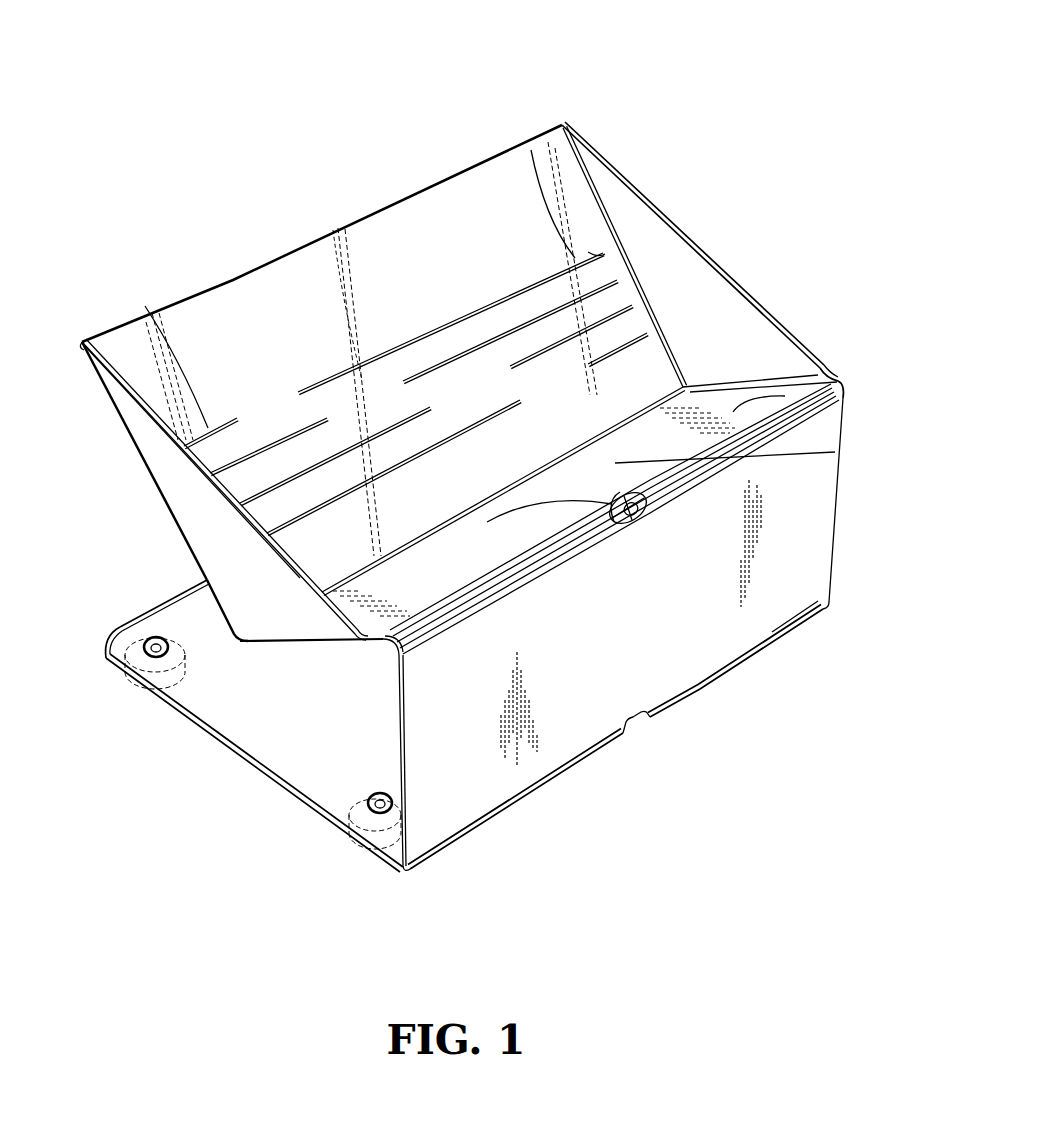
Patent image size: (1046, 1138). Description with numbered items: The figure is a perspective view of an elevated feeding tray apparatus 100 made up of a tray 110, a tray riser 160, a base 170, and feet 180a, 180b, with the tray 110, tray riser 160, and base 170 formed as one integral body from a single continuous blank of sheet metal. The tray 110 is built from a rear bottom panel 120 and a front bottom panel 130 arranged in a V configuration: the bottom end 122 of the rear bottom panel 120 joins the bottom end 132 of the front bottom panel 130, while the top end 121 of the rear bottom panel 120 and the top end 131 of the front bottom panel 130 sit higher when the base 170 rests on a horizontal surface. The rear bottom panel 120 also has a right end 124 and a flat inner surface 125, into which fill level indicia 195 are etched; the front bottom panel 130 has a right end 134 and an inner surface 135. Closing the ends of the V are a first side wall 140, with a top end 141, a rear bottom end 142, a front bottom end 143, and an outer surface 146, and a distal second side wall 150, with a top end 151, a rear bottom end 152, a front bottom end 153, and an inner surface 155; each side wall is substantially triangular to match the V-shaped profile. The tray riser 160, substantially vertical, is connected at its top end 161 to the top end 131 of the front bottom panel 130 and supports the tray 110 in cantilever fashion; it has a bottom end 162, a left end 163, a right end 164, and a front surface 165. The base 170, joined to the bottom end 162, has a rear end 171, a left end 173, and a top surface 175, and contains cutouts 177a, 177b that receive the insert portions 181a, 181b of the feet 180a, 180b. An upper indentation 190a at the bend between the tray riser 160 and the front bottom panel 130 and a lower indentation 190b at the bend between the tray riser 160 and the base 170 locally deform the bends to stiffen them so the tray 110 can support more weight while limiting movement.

The elevated feeding tray apparatus 100 is at (684, 80).
The tray 110 is at (214, 266).
The rear bottom panel 120 is at (495, 157).
The top end 121 is at (305, 238).
The bottom end 122 is at (495, 468).
The right end 124 is at (531, 150).
The inner surface 125 is at (245, 339).
The front bottom panel 130 is at (846, 393).
The top end 131 is at (836, 456).
The bottom end 132 is at (640, 525).
The right end 134 is at (723, 400).
The inner surface 135 is at (414, 573).
The first side wall 140 is at (165, 458).
The top end 141 is at (245, 527).
The rear bottom end 142 is at (200, 543).
The front bottom end 143 is at (293, 627).
The outer surface 146 is at (235, 597).
The second side wall 150 is at (628, 217).
The top end 151 is at (693, 243).
The rear bottom end 152 is at (643, 283).
The front bottom end 153 is at (722, 378).
The inner surface 155 is at (674, 326).
The tray riser 160 is at (445, 783).
The top end 161 is at (600, 548).
The bottom end 162 is at (683, 690).
The left end 163 is at (292, 787).
The right end 164 is at (832, 560).
The front surface 165 is at (594, 637).
The base 170 is at (147, 708).
The rear end 171 is at (183, 597).
The left end 173 is at (400, 735).
The top surface 175 is at (284, 711).
The cutout 177a is at (384, 810).
The cutout 177b is at (144, 648).
The foot 180a is at (349, 800).
The foot 180b is at (193, 671).
The insert portion 181a is at (375, 808).
The insert portion 181b is at (153, 652).
The upper indentation 190a is at (648, 506).
The lower indentation 190b is at (633, 725).
The fill level indicia 195 is at (153, 330).